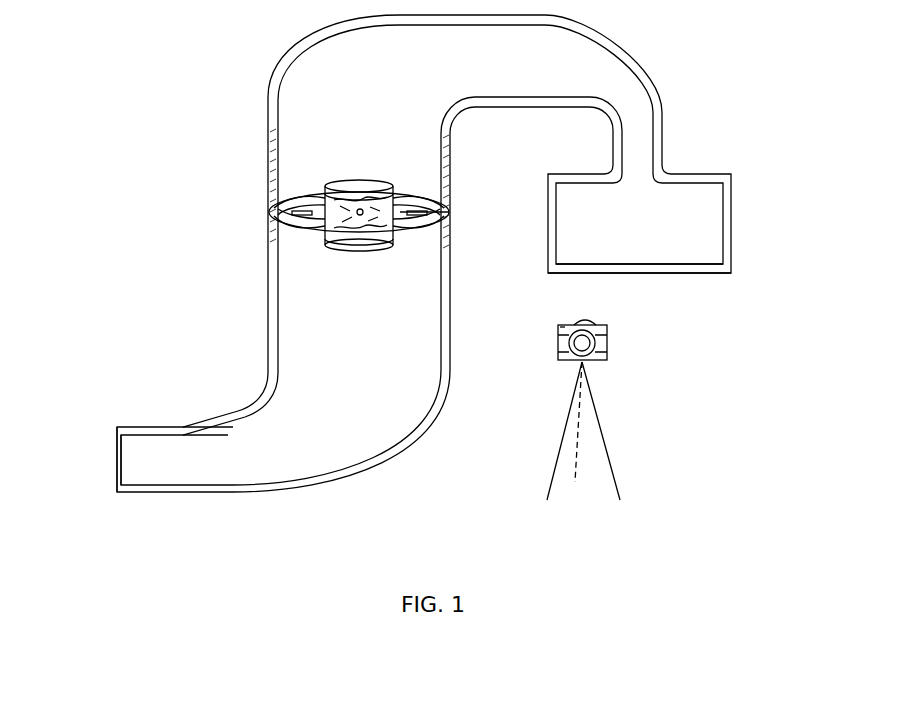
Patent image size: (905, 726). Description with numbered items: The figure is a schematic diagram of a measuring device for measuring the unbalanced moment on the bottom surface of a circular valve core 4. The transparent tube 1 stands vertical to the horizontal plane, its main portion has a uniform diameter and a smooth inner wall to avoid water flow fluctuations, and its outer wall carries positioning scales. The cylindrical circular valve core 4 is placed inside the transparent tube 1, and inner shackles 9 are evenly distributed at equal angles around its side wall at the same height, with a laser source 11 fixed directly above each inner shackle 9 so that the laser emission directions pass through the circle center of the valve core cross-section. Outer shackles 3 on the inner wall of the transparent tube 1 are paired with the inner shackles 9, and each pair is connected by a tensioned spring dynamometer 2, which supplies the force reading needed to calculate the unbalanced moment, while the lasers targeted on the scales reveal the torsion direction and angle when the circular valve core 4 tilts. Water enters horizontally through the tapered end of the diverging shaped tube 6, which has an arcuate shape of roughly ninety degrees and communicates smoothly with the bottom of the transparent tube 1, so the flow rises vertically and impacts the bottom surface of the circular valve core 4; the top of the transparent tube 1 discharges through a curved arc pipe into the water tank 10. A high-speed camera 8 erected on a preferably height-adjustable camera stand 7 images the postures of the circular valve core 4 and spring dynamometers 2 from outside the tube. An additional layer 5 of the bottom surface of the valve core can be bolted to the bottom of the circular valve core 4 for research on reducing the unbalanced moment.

The transparent tube 1 is at (268, 130).
The spring dynamometer 2 is at (295, 204).
The outer shackle 3 is at (292, 214).
The circular valve core 4 is at (340, 212).
The additional layer of bottom surface of valve core 5 is at (350, 244).
The diverging shaped tube 6 is at (233, 412).
The camera stand 7 is at (600, 423).
The high-speed camera 8 is at (606, 359).
The inner shackle 9 is at (445, 224).
The water tank 10 is at (725, 215).
The laser source 11 is at (360, 212).